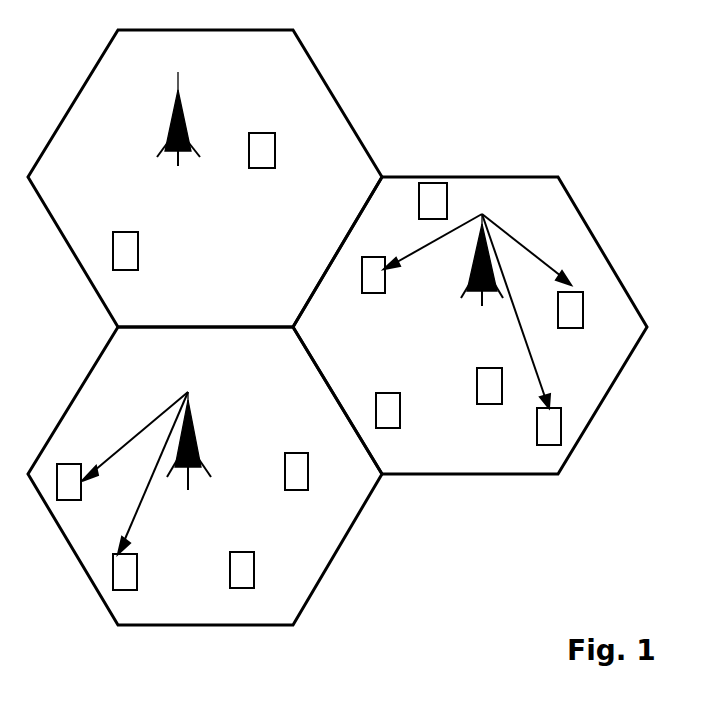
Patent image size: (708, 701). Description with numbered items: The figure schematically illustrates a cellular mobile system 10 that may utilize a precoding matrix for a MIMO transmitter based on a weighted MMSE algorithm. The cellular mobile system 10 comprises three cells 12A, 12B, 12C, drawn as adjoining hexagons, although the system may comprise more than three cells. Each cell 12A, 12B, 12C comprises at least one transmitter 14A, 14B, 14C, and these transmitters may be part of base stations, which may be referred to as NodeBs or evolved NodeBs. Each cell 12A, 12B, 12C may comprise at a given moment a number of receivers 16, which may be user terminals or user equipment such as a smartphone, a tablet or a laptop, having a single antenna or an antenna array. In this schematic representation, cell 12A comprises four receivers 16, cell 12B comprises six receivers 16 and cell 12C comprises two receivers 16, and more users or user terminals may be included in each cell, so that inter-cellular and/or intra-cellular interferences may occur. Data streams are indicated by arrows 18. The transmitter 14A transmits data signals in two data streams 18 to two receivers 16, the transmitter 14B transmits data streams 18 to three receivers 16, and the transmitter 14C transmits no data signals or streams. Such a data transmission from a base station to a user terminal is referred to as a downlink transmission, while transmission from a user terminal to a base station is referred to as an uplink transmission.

The cellular mobile system 10 is at (418, 552).
The cell 12A is at (240, 627).
The cell 12B is at (556, 471).
The cell 12C is at (329, 90).
The transmitter 14A is at (193, 412).
The transmitter 14B is at (463, 288).
The transmitter 14C is at (184, 98).
The receiver 16 is at (402, 410).
The data stream 18 is at (158, 413).